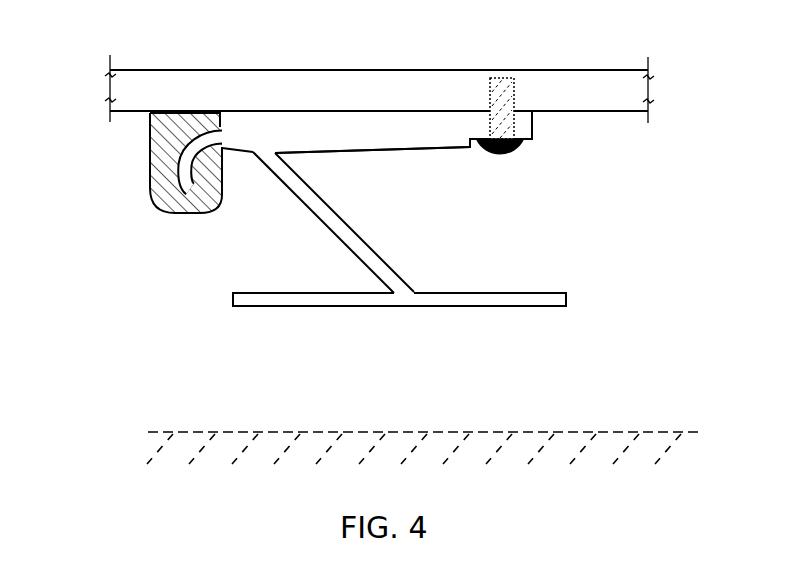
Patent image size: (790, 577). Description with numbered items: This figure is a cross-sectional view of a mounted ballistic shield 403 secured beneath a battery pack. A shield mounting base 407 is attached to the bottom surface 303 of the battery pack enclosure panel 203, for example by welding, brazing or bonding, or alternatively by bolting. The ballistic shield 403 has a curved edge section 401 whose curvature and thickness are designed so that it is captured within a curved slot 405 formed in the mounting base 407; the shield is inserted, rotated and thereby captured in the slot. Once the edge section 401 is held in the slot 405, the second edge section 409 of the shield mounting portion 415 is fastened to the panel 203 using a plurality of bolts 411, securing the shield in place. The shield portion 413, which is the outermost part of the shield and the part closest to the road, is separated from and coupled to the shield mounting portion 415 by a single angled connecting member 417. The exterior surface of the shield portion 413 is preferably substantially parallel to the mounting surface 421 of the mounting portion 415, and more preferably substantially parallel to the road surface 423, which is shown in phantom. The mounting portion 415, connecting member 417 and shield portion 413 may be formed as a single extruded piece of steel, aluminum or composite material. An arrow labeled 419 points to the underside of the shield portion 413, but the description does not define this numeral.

The battery pack enclosure panel 203 is at (354, 101).
The bottom surface 303 is at (128, 112).
The edge section 401 is at (162, 208).
The ballistic shield 403 is at (370, 247).
The slot 405 is at (165, 160).
The shield mounting base 407 is at (163, 113).
The second edge section 409 is at (522, 126).
The bolt 411 is at (500, 155).
The shield portion 413 is at (430, 298).
The shield mounting portion 415 is at (404, 142).
The connecting member 417 is at (345, 237).
The bottom surface 419 is at (533, 312).
The mounting surface 421 is at (443, 112).
The road surface 423 is at (400, 428).